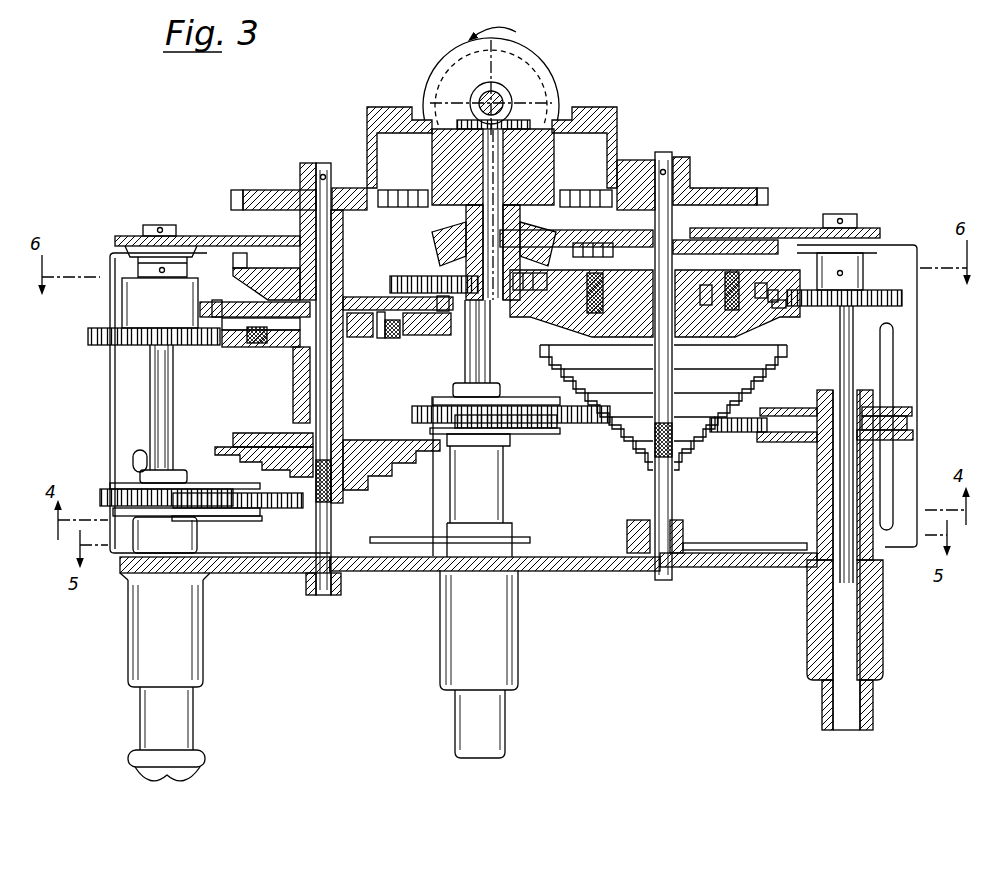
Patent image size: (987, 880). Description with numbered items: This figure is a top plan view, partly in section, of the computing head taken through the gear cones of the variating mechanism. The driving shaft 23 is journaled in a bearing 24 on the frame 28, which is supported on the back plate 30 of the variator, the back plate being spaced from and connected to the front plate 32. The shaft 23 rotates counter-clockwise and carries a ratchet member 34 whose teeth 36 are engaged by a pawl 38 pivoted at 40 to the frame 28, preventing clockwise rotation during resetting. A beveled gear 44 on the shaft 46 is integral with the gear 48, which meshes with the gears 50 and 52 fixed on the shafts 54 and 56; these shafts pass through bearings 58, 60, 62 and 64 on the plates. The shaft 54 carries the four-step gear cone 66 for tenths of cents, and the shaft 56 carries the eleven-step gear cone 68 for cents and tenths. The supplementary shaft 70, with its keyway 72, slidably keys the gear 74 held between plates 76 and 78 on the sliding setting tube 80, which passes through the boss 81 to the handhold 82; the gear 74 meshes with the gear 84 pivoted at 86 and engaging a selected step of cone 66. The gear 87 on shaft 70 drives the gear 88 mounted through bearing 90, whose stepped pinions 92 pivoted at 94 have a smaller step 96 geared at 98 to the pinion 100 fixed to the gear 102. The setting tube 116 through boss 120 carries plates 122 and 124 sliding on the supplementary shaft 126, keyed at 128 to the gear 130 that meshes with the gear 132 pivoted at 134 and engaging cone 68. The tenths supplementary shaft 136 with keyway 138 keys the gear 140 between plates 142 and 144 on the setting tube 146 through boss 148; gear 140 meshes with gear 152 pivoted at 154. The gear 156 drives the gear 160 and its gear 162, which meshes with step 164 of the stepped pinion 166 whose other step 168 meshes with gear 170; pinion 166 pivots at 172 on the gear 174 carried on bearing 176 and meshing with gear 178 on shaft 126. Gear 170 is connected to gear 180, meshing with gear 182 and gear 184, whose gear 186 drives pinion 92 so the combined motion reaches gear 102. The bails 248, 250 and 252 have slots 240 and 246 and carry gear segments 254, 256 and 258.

The driving shaft 23 is at (505, 102).
The bearing 24 is at (478, 90).
The frame 28 is at (593, 110).
The back plate 30 is at (130, 236).
The front plate 32 is at (570, 571).
The ratchet member 34 is at (530, 73).
The teeth 36 is at (526, 54).
The pawl 38 is at (440, 140).
The pivot 40 is at (508, 215).
The beveled gear 44 is at (537, 125).
The shaft 46 is at (575, 190).
The gear 48 is at (625, 180).
The gear 50 is at (273, 190).
The gear 52 is at (698, 188).
The shaft 54 is at (325, 163).
The shaft 56 is at (665, 160).
The bearing 58 is at (310, 223).
The bearing 60 is at (310, 590).
The bearing 62 is at (760, 190).
The bearing 64 is at (683, 530).
The gear cone 66 is at (220, 449).
The gear cone 68 is at (640, 460).
The supplementary shaft 70 is at (150, 362).
The keyway 72 is at (160, 380).
The gear 74 is at (102, 495).
The plate 76 is at (125, 484).
The plate 78 is at (113, 511).
The sliding setting tube 80 is at (148, 700).
The boss 81 is at (135, 608).
The handhold 82 is at (135, 775).
The gear 84 is at (265, 510).
The pivot 86 is at (240, 521).
The gear 87 is at (96, 328).
The gear 88 is at (240, 347).
The bearing 90 is at (295, 360).
The stepped pinion 92 is at (217, 300).
The pivot 94 is at (245, 304).
The smaller step 96 is at (260, 343).
The gearing 98 is at (382, 338).
The pinion 100 is at (365, 337).
The gear 102 is at (250, 433).
The sliding setting tube 116 is at (458, 713).
The boss 120 is at (440, 636).
The plate 122 is at (515, 446).
The plate 124 is at (512, 398).
The supplementary shaft 126 is at (490, 370).
The key 128 is at (476, 372).
The gear 130 is at (413, 413).
The gear 132 is at (560, 425).
The pivot 134 is at (545, 432).
The tenths supplementary shaft 136 is at (855, 340).
The keyway 138 is at (847, 356).
The gear 140 is at (905, 420).
The plate 142 is at (900, 408).
The plate 144 is at (912, 436).
The sliding setting tube 146 is at (822, 704).
The boss 148 is at (817, 640).
The gear 152 is at (735, 432).
The pivot 154 is at (775, 442).
The gear 156 is at (876, 288).
The gear 160 is at (790, 318).
The gear 162 is at (688, 330).
The gear step 164 is at (780, 300).
The stepped pinion 166 is at (773, 290).
The step 168 is at (761, 283).
The gear 170 is at (705, 285).
The pivot 172 is at (733, 272).
The gear 174 is at (785, 230).
The bearing 176 is at (635, 280).
The gear 178 is at (490, 300).
The gear 180 is at (585, 245).
The gear 182 is at (452, 245).
The gear 184 is at (240, 260).
The gear 186 is at (298, 296).
The longitudinal slot 240 is at (135, 455).
The longitudinal slot 246 is at (893, 470).
The bail 248 is at (110, 408).
The bail 250 is at (433, 512).
The bail 252 is at (917, 296).
The gear segment 254 is at (255, 573).
The gear segment 256 is at (412, 543).
The gear segment 258 is at (750, 567).